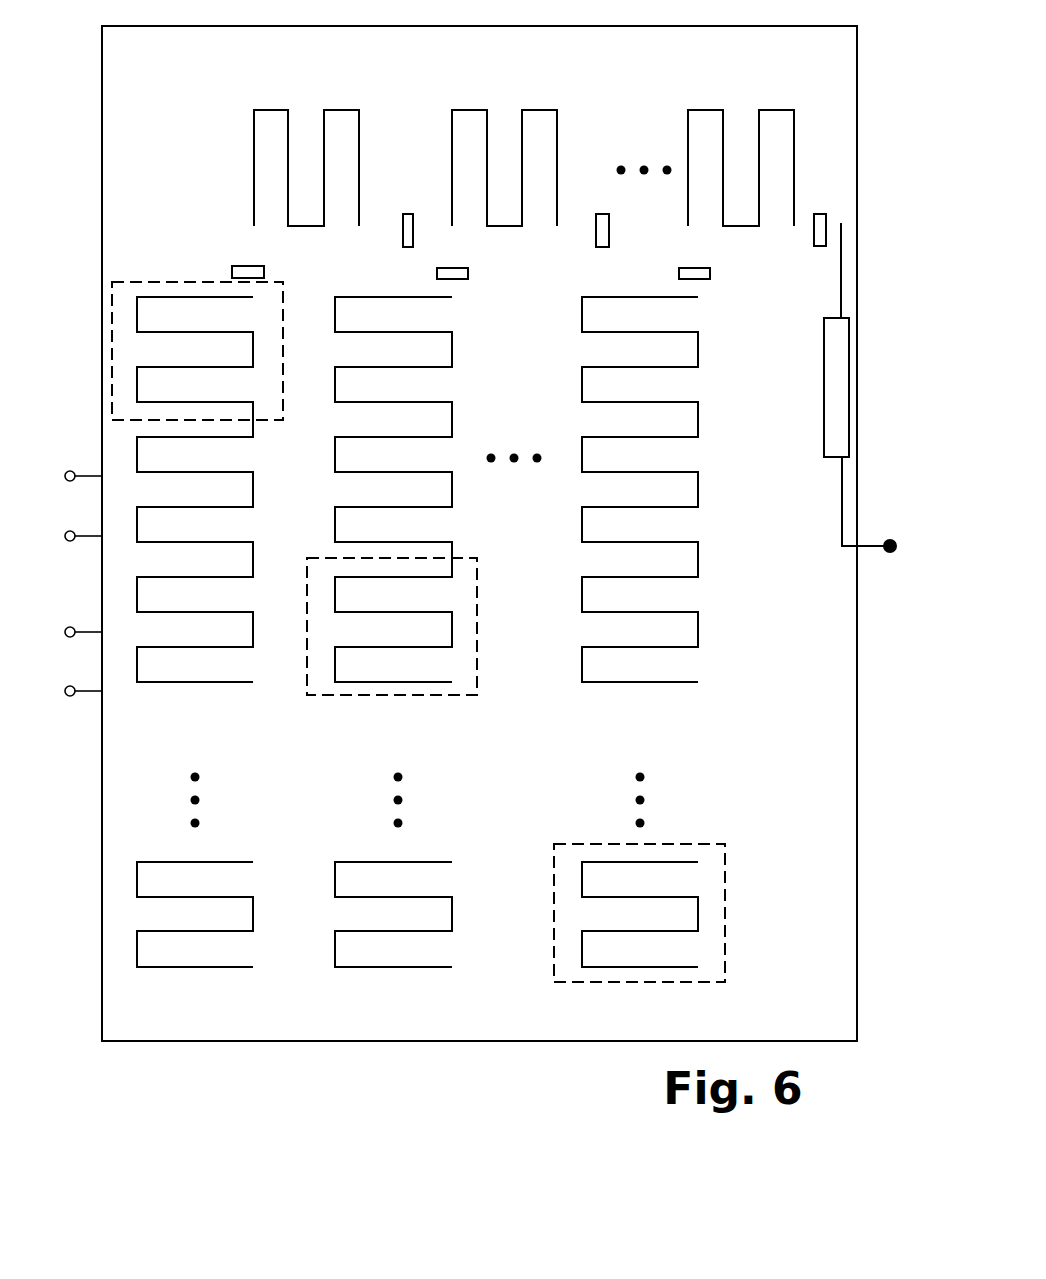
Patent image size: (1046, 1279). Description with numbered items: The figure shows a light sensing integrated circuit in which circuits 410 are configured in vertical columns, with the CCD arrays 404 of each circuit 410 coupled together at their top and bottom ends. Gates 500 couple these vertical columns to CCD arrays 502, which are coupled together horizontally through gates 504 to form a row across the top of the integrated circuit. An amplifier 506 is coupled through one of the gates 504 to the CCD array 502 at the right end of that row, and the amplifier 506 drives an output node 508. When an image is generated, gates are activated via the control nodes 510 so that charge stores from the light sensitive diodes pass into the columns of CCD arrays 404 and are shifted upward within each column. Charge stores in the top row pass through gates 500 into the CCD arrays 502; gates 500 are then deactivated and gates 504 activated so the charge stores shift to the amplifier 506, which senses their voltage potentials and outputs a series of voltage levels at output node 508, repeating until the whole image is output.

The CCD array 404 is at (136, 316).
The circuit 410 is at (260, 421).
The gate 500 is at (246, 265).
The CCD array 502 is at (280, 108).
The gate 504 is at (411, 213).
The amplifier 506 is at (833, 459).
The output node 508 is at (884, 552).
The control node 510 is at (100, 482).